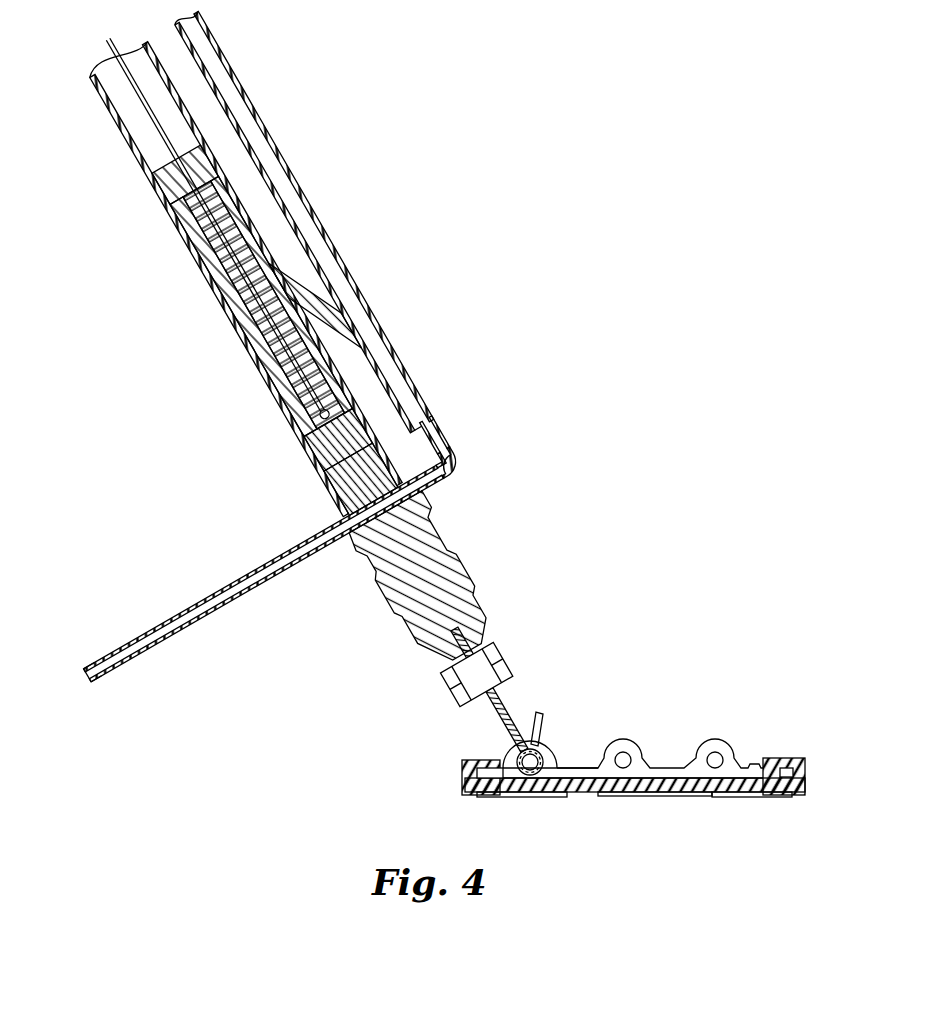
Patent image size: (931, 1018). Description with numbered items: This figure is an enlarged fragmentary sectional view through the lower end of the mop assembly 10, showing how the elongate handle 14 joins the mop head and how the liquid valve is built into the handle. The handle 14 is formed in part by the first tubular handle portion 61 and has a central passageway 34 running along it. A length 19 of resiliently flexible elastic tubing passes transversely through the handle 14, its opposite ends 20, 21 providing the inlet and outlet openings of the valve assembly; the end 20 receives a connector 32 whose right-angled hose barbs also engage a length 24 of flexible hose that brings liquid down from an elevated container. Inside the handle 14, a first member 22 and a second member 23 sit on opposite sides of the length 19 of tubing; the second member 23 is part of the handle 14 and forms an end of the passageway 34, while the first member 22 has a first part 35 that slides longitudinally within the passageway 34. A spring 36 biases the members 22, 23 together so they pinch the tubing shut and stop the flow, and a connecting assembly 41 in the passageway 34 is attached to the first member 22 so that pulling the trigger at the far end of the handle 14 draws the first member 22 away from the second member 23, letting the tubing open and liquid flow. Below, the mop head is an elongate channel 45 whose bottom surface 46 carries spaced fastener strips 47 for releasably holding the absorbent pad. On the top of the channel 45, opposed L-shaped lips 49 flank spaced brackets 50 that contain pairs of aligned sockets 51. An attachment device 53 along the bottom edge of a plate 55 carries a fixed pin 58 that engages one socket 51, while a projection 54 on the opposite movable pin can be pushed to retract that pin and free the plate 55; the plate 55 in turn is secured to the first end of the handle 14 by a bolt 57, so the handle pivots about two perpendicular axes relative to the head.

The mop assembly 10 is at (394, 191).
The elongate handle 14 is at (112, 118).
The length of tubing 19 is at (283, 572).
The end of tubing 20 is at (435, 488).
The end of tubing 21 is at (98, 675).
The first member 22 is at (342, 470).
The second member 23 is at (425, 523).
The length of hose 24 is at (287, 160).
The connector 32 is at (462, 457).
The central passageway 34 is at (148, 156).
The first part 35 is at (332, 447).
The spring 36 is at (250, 308).
The connecting assembly 41 is at (111, 46).
The channel 45 is at (673, 797).
The bottom surface 46 is at (607, 797).
The fastener strips 47 is at (487, 797).
The L-shaped lips 49 is at (475, 758).
The brackets 50 is at (580, 775).
The sockets 51 is at (713, 758).
The attachment device 53 is at (543, 775).
The projection 54 is at (540, 722).
The plate 55 is at (505, 702).
The bolt 57 is at (500, 662).
The pin 58 is at (541, 755).
The first tubular handle portion 61 is at (91, 82).